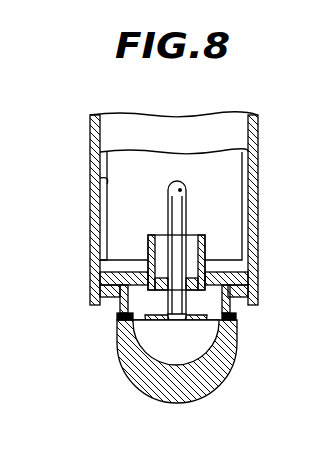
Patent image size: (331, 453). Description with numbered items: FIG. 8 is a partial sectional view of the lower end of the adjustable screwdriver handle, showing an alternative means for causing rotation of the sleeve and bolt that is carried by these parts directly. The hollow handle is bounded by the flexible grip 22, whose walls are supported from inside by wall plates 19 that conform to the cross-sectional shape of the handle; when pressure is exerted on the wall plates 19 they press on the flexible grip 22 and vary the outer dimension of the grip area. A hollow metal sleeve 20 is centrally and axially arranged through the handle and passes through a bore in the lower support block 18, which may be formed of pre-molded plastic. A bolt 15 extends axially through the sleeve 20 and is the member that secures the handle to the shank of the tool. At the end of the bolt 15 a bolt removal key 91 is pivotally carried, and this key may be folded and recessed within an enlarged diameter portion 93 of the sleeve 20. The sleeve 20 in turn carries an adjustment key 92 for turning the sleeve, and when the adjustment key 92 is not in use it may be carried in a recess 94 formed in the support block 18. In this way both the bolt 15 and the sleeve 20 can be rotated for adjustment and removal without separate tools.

The bolt 15 is at (187, 213).
The lower support block 18 is at (256, 281).
The wall plates 19 is at (92, 191).
The hollow metal sleeve 20 is at (222, 228).
The flexible grip 22 is at (90, 245).
The bolt removal key 91 is at (150, 340).
The adjustment key 92 is at (185, 399).
The enlarged diameter portion 93 is at (243, 316).
The recess 94 is at (110, 316).